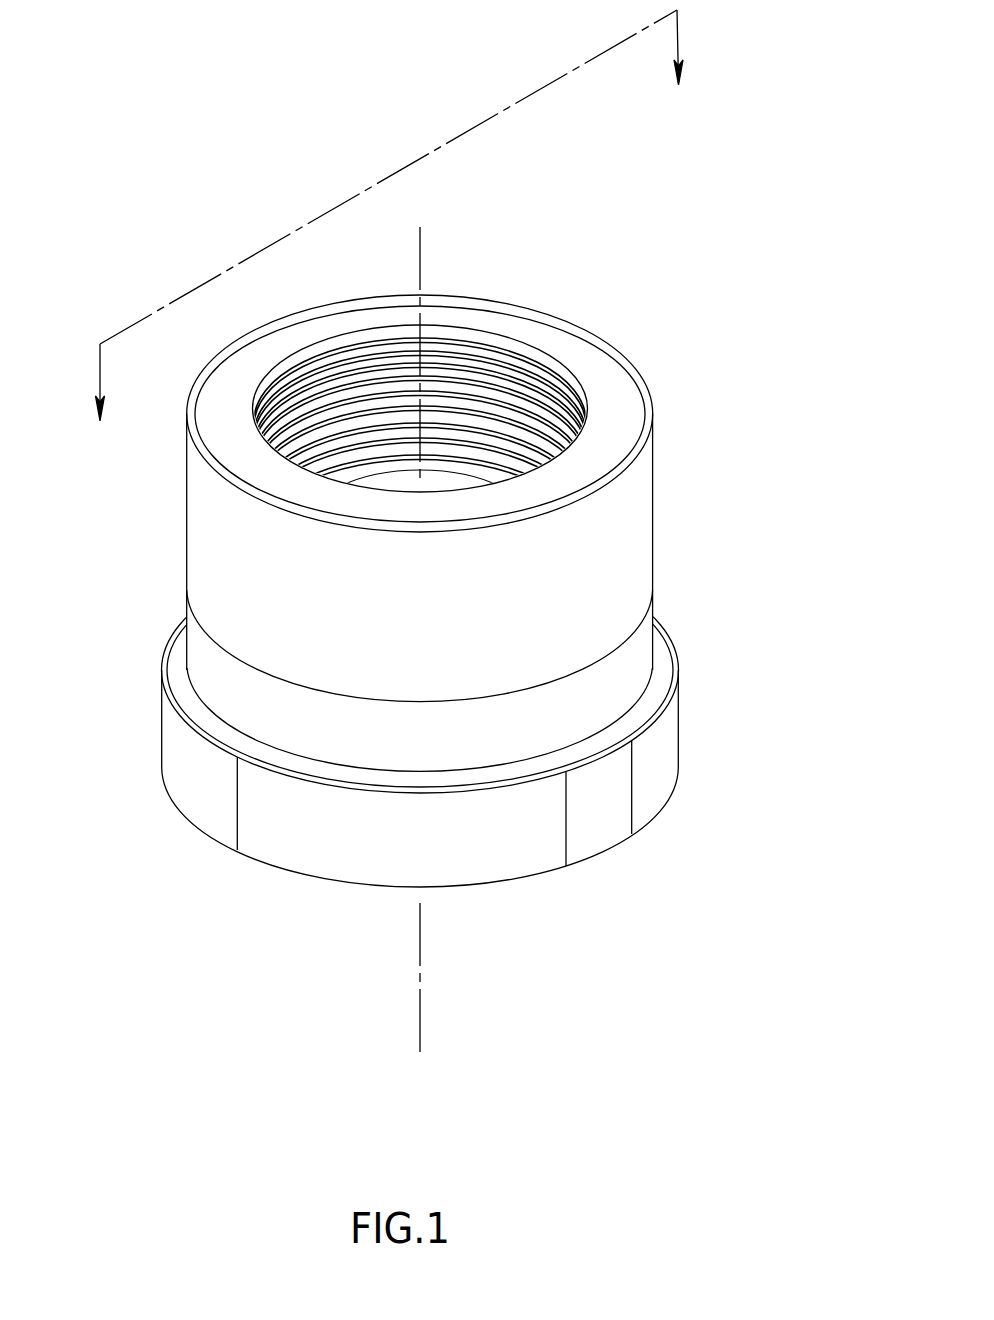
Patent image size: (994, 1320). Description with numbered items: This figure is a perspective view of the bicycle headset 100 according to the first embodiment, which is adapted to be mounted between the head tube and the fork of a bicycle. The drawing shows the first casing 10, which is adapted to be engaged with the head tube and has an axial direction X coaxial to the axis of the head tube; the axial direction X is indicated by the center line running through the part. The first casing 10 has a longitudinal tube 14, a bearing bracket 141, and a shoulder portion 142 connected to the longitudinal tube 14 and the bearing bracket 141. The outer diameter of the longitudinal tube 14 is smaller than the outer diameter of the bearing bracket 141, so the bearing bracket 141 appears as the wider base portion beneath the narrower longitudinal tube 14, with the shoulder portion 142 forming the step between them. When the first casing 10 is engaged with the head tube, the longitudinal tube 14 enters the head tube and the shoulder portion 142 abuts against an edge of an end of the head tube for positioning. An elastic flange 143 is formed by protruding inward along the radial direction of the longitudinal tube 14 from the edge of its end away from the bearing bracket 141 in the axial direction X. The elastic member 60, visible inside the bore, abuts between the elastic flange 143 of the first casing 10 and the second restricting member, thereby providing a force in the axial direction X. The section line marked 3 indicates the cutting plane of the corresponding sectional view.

The bicycle headset 100 is at (224, 223).
The first casing 10 is at (653, 500).
The longitudinal tube 14 is at (203, 552).
The bearing bracket 141 is at (662, 743).
The shoulder portion 142 is at (662, 648).
The elastic flange 143 is at (493, 316).
The elastic member 60 is at (542, 381).
The axial direction X is at (422, 245).
The section line 3- 3 is at (389, 231).